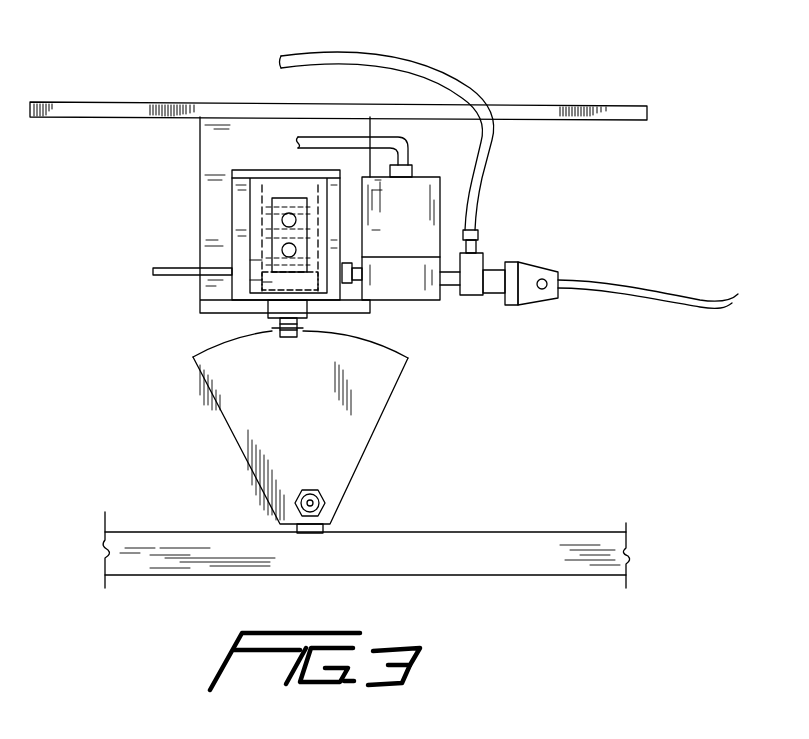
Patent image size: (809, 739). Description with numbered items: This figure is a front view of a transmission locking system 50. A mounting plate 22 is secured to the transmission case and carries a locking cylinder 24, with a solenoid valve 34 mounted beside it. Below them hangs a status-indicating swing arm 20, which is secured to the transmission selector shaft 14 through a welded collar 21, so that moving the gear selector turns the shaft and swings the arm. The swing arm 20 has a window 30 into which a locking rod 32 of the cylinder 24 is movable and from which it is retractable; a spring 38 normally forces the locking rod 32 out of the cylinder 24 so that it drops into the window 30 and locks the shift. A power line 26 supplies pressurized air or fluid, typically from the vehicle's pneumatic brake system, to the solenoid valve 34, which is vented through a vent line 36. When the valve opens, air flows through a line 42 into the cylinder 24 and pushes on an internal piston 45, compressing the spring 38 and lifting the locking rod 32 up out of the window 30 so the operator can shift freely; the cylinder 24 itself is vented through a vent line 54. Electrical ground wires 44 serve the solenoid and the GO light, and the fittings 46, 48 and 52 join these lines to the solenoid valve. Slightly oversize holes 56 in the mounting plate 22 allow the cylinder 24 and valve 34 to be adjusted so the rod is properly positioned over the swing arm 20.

The transmission selector shaft 14 is at (580, 565).
The status-indicating swing arm 20 is at (368, 417).
The welded collar 21 is at (327, 498).
The mounting plate 22 is at (583, 107).
The locking cylinder 24 is at (200, 194).
The power line 26 is at (385, 63).
The window 30 is at (266, 328).
The locking rod 32 is at (290, 338).
The solenoid valve 34 is at (403, 287).
The vent line 36 is at (404, 164).
The spring 38 is at (265, 224).
The line 42 is at (342, 285).
The electrical ground wires 44 is at (700, 308).
The internal piston 45 is at (262, 284).
The connector 46 is at (558, 272).
The fitting nut 48 is at (474, 257).
The transmission locking system 50 is at (163, 86).
The elbow fitting 52 is at (464, 294).
The vent line 54 is at (167, 280).
The oversize holes 56 is at (232, 280).